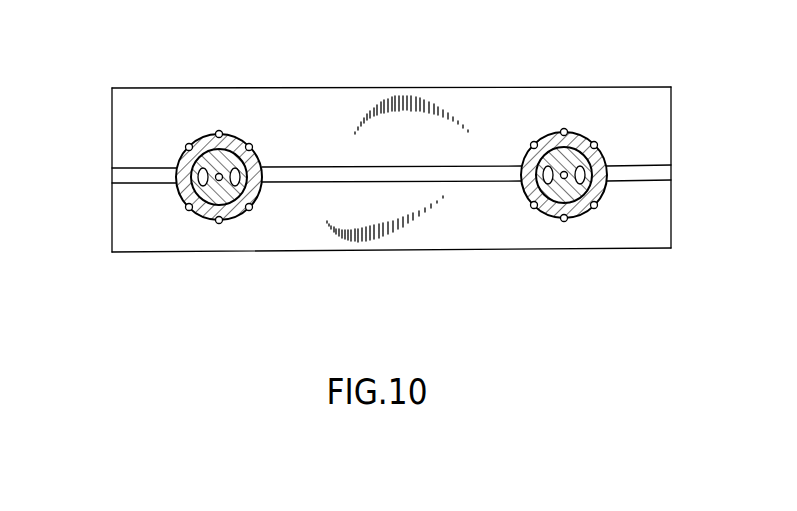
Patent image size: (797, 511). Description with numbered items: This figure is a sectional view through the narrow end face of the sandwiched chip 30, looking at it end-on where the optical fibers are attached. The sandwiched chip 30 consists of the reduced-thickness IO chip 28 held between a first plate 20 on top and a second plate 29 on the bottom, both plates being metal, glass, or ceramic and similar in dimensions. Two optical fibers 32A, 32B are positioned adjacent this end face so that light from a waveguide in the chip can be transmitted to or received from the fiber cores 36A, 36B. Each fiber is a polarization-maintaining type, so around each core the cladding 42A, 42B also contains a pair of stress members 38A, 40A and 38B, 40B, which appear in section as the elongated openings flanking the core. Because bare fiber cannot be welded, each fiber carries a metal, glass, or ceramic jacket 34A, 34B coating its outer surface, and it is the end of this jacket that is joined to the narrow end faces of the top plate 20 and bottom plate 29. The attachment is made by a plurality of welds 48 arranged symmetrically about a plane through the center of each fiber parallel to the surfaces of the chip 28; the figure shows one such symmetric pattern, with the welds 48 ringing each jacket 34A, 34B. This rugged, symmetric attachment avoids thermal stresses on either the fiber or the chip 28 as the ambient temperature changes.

The first plate 20 is at (326, 120).
The reduced-thickness IO chip 28 is at (120, 178).
The second plate 29 is at (157, 243).
The sandwiched chip 30 is at (459, 85).
The optical fiber 32A is at (207, 157).
The optical fiber 32B is at (551, 156).
The jacket 34A is at (203, 213).
The jacket 34B is at (548, 211).
The fiber core 36A is at (221, 180).
The fiber core 36B is at (566, 181).
The stress member 38A is at (199, 168).
The stress member 38B is at (545, 178).
The stress member 40A is at (236, 178).
The stress member 40B is at (582, 177).
The cladding 42A is at (203, 165).
The cladding 42B is at (575, 157).
The welds 48 is at (187, 143).